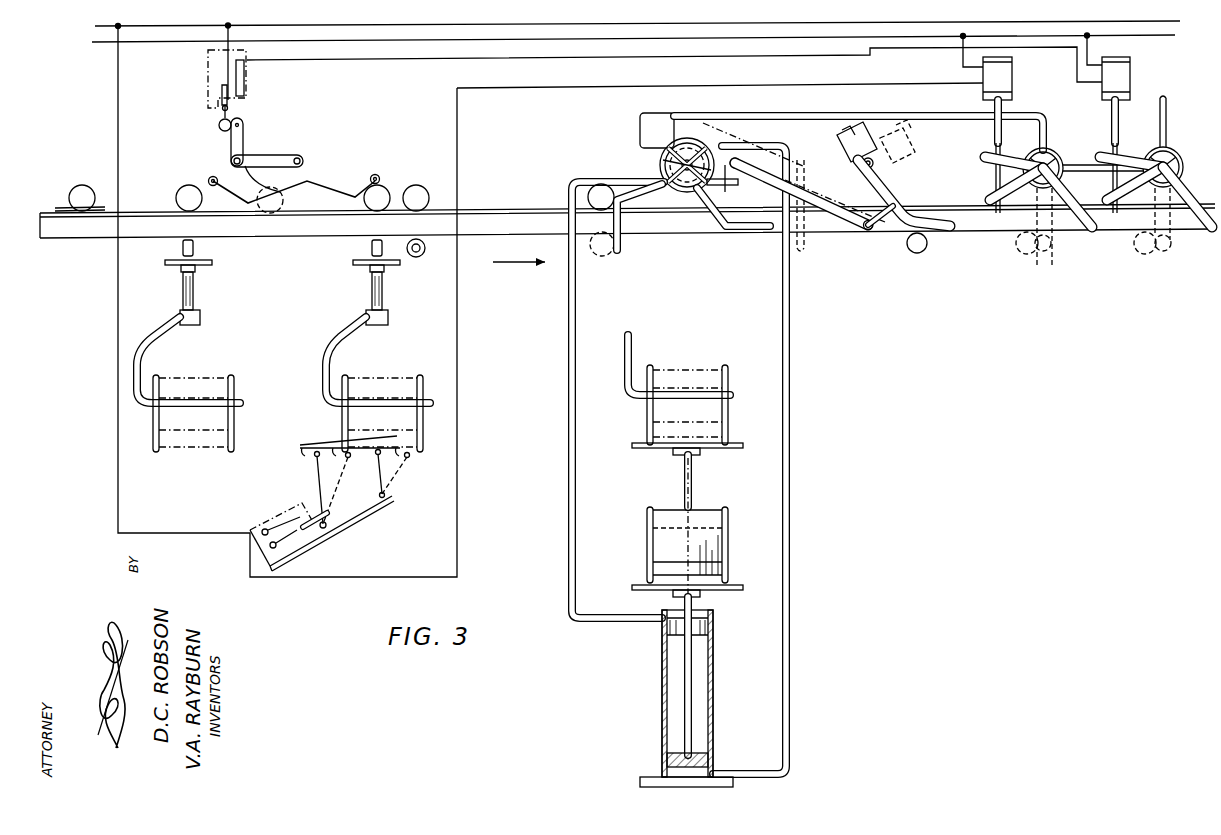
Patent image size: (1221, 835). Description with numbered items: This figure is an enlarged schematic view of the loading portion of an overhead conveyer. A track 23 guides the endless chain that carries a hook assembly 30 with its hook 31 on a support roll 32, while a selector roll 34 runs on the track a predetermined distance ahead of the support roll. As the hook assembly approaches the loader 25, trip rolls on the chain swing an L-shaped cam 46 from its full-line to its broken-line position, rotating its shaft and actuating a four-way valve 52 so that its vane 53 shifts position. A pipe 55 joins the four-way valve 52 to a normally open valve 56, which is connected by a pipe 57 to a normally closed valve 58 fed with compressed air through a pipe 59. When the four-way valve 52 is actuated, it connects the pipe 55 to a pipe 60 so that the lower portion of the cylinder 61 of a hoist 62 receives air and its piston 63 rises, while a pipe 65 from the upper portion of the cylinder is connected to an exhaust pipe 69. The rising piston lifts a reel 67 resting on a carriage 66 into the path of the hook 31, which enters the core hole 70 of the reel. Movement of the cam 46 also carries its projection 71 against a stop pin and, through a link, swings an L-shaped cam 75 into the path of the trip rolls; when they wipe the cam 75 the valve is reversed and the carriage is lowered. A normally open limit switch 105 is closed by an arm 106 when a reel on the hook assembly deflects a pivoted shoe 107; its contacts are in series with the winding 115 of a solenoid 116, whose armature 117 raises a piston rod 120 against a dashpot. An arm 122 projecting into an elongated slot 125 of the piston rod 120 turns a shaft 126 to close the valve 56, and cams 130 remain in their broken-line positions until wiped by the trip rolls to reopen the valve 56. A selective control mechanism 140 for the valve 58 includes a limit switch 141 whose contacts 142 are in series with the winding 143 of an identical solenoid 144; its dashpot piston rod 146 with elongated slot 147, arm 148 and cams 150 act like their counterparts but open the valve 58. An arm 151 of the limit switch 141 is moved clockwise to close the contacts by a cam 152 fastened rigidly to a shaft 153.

The track 23 is at (108, 238).
The loader 25 is at (205, 122).
The hook assembly 30 is at (208, 290).
The hook 31 is at (165, 328).
The support roll 32 is at (182, 190).
The selector roll 34 is at (84, 190).
The L-shaped cam 46 is at (614, 218).
The four-way valve 52 is at (657, 130).
The vane 53 is at (692, 140).
The pipe 55 is at (758, 118).
The normally open valve 56 is at (1047, 150).
The pipe 57 is at (1074, 164).
The normally closed valve 58 is at (1168, 150).
The pipe 59 is at (1166, 102).
The pipe 60 is at (788, 432).
The cylinder 61 is at (715, 662).
The hoist 62 is at (736, 608).
The piston 63 is at (700, 762).
The pipe 65 is at (568, 490).
The carriage 66 is at (735, 588).
The reel 67 is at (727, 402).
The exhaust pipe 69 is at (718, 190).
The core hole 70 is at (665, 532).
The projection 71 is at (727, 180).
The L-shaped cam 75 is at (882, 244).
The limit switch 105 is at (272, 522).
The arm 106 is at (318, 486).
The shoe 107 is at (384, 452).
The winding 115 is at (1002, 72).
The solenoid 116 is at (1014, 86).
The armature 117 is at (993, 106).
The piston rod 120 is at (995, 150).
The arm 122 is at (1020, 176).
The elongated slot 125 is at (1000, 196).
The shaft 126 is at (1038, 178).
The cam 130 is at (1052, 256).
The selective control mechanism 140 is at (205, 92).
The limit switch 141 is at (208, 62).
The contacts 142 is at (230, 98).
The winding 143 is at (1130, 78).
The solenoid 144 is at (1117, 52).
The piston rod 146 is at (1118, 152).
The elongated slot 147 is at (1088, 226).
The arm 148 is at (1140, 186).
The cam 150 is at (1168, 240).
The arm 151 is at (218, 128).
The cam 152 is at (240, 128).
The shaft 153 is at (242, 160).